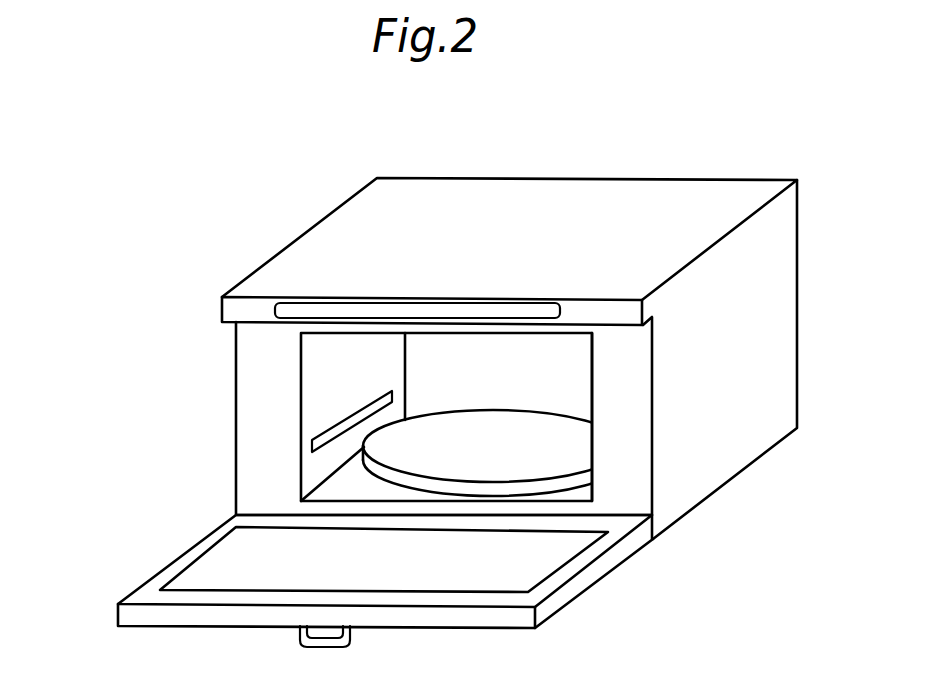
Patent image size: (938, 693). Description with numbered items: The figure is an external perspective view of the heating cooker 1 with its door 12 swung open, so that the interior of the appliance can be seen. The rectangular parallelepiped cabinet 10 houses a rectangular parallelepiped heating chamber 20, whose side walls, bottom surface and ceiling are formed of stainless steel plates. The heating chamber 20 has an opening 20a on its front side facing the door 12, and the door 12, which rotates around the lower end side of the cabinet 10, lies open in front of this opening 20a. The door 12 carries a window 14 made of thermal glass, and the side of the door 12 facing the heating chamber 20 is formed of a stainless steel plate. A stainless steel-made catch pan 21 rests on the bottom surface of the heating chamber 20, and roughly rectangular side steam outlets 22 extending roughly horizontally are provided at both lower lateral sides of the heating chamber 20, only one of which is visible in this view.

The heating cooker 1 is at (762, 163).
The cabinet 10 is at (302, 270).
The door 12 is at (597, 570).
The window 14 is at (255, 562).
The heating chamber 20 is at (323, 353).
The opening 20a is at (573, 358).
The catch pan 21 is at (398, 453).
The side steam outlets 22 is at (325, 438).